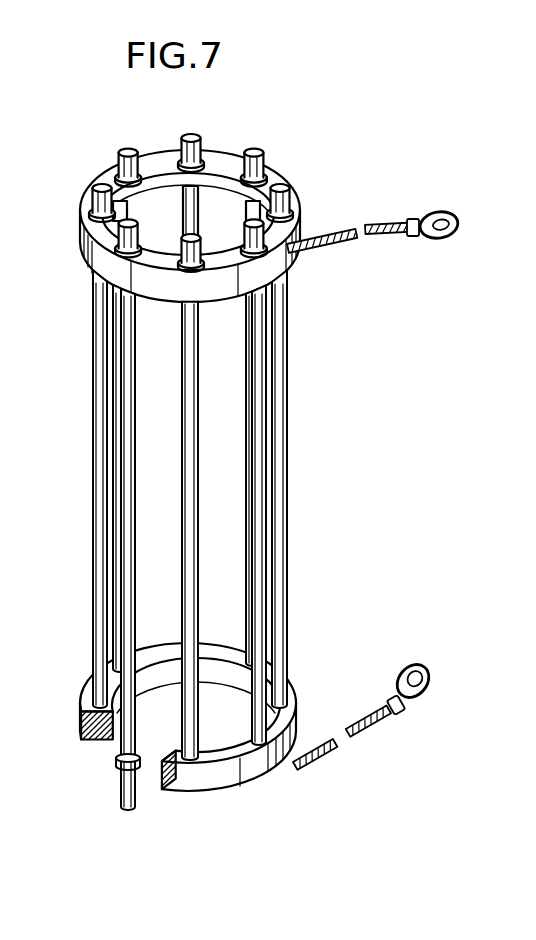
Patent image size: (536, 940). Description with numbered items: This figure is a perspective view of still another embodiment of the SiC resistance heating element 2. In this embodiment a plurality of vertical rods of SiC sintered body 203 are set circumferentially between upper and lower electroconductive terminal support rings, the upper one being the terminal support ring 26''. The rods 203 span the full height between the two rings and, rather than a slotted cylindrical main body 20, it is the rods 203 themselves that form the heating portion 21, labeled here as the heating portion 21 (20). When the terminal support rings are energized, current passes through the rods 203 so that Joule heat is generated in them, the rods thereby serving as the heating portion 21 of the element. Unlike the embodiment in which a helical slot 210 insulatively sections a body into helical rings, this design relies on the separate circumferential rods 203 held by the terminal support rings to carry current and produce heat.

The electrode assembly 2 is at (239, 494).
The cylindrical main body 20 is at (214, 494).
The heating portion 21 is at (214, 494).
The electroconductive terminal support ring 26'' is at (171, 494).
The vertical rods of SiC sintered body 203 is at (188, 473).
The helical slot 210 is at (292, 266).